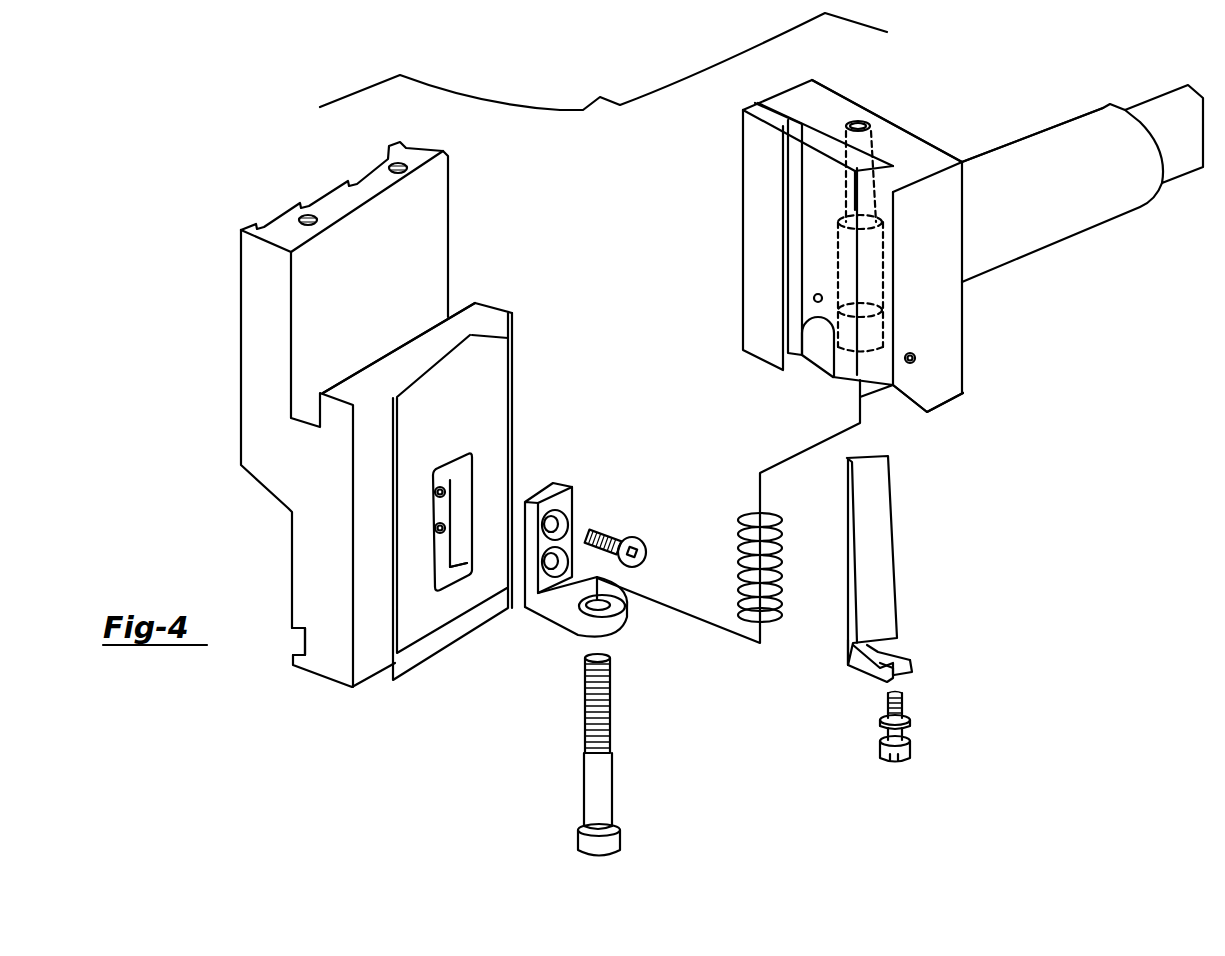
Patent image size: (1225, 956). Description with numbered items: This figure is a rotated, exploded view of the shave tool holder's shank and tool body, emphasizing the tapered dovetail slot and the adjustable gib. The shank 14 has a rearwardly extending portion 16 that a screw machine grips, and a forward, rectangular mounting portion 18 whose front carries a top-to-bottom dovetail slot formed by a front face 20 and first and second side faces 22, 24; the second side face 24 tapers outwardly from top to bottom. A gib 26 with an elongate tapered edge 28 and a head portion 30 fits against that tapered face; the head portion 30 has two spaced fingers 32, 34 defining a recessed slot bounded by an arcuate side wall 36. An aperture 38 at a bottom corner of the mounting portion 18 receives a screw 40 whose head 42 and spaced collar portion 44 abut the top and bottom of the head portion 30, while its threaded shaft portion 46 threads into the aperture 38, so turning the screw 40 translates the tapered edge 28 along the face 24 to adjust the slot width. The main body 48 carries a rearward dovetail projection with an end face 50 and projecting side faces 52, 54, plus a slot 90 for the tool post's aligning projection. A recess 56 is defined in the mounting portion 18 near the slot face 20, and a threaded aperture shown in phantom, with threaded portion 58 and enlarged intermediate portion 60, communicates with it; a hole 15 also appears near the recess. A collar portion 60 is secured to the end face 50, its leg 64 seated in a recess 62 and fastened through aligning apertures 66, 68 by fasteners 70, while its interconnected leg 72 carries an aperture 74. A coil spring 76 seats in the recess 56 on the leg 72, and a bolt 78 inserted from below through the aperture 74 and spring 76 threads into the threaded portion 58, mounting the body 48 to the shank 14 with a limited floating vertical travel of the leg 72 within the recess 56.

The shank 14 is at (987, 112).
The hole 15 is at (805, 290).
The rearwardly extending portion 16 is at (1093, 211).
The mounting portion 18 is at (793, 84).
The front face 20 is at (820, 143).
The first extending side face 22 is at (792, 120).
The second extending side face 24 is at (873, 152).
The gib 26 is at (937, 585).
The tapered edge 28 is at (883, 532).
The head portion 30 is at (848, 668).
The finger 32 is at (909, 637).
The finger 34 is at (912, 658).
The arcuate extending side wall 36 is at (903, 668).
The aperture 38 is at (889, 395).
The screw 40 is at (917, 727).
The head 42 is at (887, 748).
The collar portion 44 is at (880, 723).
The threaded shaft portion 46 is at (902, 703).
The main body 48 is at (178, 329).
The end face 50 is at (472, 387).
The first projecting side face 52 is at (503, 320).
The second projecting side face 54 is at (387, 397).
The recess 56 is at (818, 355).
The threaded portion 58 is at (862, 118).
The collar portion 60 is at (850, 260).
The recess 62 is at (460, 492).
The leg 64 is at (572, 505).
The apertures 66 is at (436, 528).
The apertures 68 is at (455, 567).
The mounting fastener 70 is at (615, 538).
The interconnected leg 72 is at (622, 623).
The aperture 74 is at (583, 605).
The coil spring 76 is at (738, 562).
The bolt 78 is at (592, 777).
The slot 90 is at (292, 641).